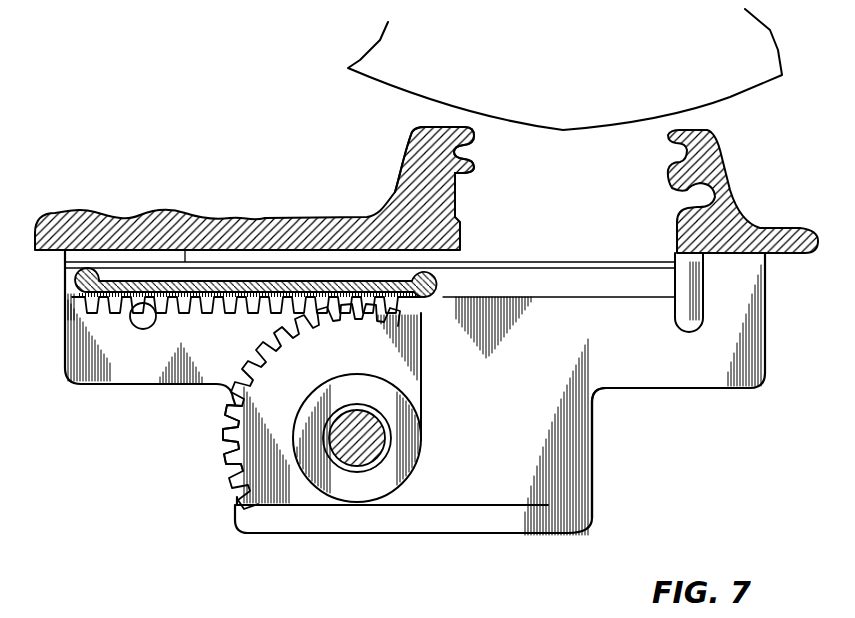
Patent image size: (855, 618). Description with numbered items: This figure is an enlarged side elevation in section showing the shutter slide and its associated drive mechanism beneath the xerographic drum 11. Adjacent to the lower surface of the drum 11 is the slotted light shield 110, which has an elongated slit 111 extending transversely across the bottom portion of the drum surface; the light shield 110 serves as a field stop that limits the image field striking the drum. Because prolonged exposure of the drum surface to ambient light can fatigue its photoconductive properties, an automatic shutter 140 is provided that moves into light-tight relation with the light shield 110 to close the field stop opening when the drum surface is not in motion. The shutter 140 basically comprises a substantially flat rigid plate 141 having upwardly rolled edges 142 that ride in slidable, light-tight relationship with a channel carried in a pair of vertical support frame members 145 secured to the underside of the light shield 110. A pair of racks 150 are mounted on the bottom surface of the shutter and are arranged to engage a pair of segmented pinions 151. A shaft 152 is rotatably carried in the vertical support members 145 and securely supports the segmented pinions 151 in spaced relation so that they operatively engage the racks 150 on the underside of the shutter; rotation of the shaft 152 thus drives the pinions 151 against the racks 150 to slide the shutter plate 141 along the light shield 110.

The drum 11 is at (375, 81).
The light shield 110 is at (227, 217).
The slit 111 is at (474, 191).
The automatic shutter 140 is at (183, 395).
The plate 141 is at (236, 306).
The rolled edges 142 is at (437, 284).
The vertical support frame 145 is at (578, 447).
The rack 150 is at (105, 304).
The segmented pinion 151 is at (228, 478).
The shaft 152 is at (387, 445).